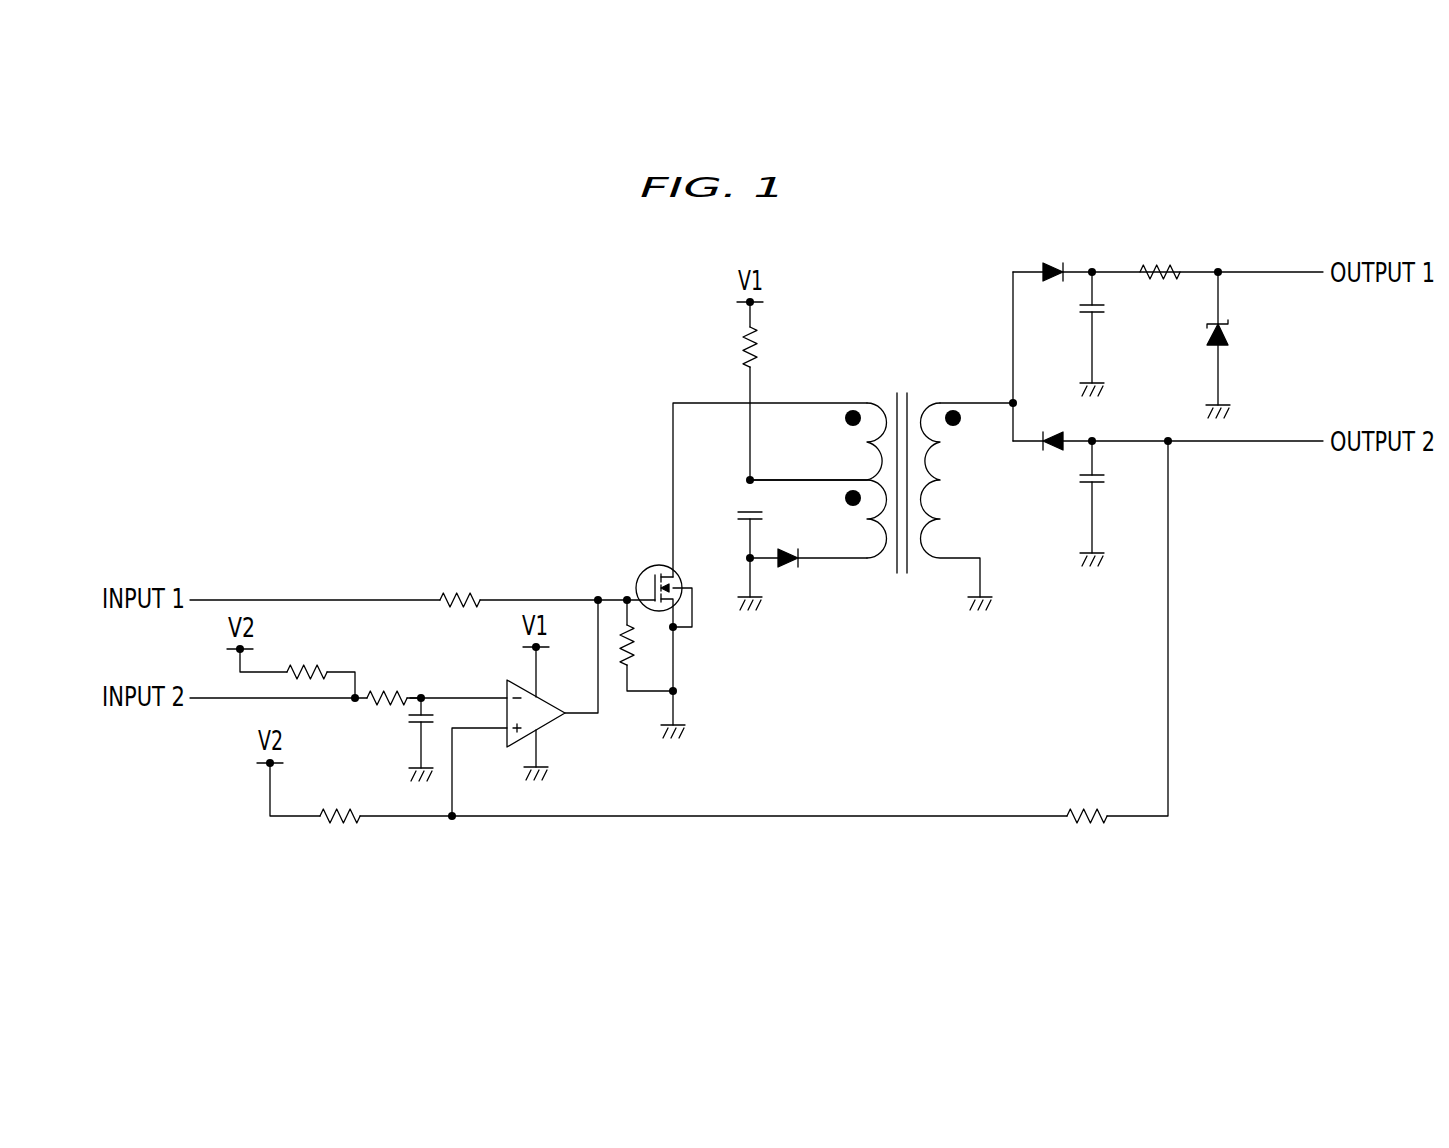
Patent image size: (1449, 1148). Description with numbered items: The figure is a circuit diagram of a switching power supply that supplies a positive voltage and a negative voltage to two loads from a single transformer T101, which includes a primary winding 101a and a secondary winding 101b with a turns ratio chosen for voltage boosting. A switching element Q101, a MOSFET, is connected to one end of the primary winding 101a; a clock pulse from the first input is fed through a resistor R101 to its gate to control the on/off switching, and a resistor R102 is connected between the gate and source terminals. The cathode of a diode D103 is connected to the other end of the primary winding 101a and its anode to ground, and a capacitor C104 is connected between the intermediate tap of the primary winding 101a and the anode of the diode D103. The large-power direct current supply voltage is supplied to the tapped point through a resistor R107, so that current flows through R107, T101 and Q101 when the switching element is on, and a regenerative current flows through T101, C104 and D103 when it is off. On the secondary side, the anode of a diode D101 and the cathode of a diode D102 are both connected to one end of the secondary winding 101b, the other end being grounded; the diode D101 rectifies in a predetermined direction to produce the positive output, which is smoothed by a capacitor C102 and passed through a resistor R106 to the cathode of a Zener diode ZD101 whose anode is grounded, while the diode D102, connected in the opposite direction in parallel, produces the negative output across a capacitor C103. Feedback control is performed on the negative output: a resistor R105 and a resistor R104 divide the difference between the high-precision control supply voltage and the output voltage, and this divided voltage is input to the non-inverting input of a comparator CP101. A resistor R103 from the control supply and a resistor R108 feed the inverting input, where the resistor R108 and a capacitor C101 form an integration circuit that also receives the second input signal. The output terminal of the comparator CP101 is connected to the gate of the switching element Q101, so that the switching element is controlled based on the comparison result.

The resistor R101 is at (463, 583).
The resistor R102 is at (635, 650).
The resistor R103 is at (310, 655).
The resistor R104 is at (338, 799).
The resistor R105 is at (1087, 799).
The resistor R106 is at (1161, 253).
The resistor R107 is at (717, 347).
The resistor R108 is at (388, 681).
The capacitor C101 is at (397, 739).
The capacitor C102 is at (1120, 334).
The capacitor C103 is at (1117, 503).
The capacitor C104 is at (725, 533).
The diode D101 is at (1057, 254).
The diode D102 is at (1035, 460).
The diode D103 is at (808, 545).
The Zener diode ZD101 is at (1259, 345).
The switching element Q101 is at (646, 583).
The comparator CP101 is at (561, 713).
The transformer T101 is at (872, 469).
The primary winding 101a is at (827, 400).
The secondary winding 101b is at (968, 400).